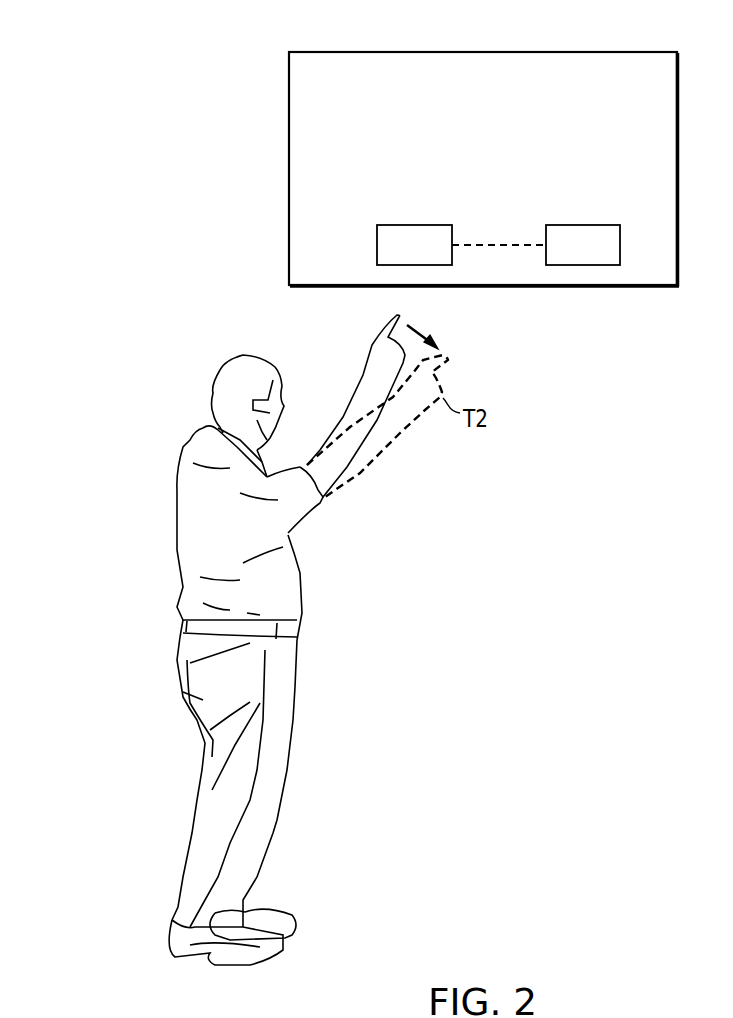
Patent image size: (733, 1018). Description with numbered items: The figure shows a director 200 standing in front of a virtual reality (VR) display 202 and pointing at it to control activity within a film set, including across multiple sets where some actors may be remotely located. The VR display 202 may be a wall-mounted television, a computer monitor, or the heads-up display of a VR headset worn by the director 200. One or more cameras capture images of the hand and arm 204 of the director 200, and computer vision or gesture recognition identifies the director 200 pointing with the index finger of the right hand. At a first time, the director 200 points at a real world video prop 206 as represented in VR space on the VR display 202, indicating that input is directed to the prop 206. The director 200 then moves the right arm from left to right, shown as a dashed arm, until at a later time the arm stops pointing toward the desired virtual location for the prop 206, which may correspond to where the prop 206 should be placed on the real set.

The director 200 is at (177, 482).
The virtual reality (VR) display 202 is at (482, 52).
The hand and arm 204 is at (372, 343).
The real world (RW) video prop 206 is at (417, 225).